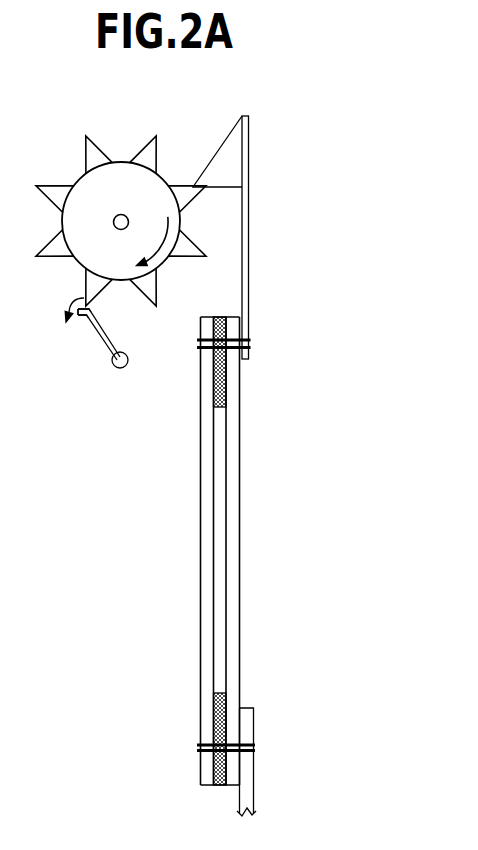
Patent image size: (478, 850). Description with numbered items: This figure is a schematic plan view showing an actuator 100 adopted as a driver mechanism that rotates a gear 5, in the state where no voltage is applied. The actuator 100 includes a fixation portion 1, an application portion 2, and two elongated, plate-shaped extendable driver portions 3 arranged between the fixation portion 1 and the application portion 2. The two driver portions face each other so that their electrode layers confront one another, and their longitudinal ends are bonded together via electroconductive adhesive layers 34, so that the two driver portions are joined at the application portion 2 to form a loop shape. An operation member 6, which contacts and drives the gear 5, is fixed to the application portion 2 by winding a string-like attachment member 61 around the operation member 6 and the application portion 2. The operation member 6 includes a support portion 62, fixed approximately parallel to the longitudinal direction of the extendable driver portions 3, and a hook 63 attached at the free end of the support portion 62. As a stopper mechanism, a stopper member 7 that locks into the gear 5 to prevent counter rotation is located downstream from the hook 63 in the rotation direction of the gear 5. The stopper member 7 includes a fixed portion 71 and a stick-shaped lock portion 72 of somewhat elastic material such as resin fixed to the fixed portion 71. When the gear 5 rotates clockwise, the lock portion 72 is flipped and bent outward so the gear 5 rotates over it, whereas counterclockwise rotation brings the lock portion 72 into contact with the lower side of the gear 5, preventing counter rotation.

The fixation portion 1 is at (186, 739).
The application portion 2 is at (221, 551).
The extendable driver portions 3 is at (221, 551).
The gear 5 is at (64, 157).
The operation member 6 is at (246, 225).
The stopper member 7 is at (76, 354).
The electroconductive adhesive layers 34 is at (227, 390).
The attachment member 61 is at (237, 337).
The support portion 62 is at (248, 165).
The hook 63 is at (225, 150).
The fixed portion 71 is at (110, 368).
The lock portion 72 is at (97, 327).
The actuator 100 is at (266, 324).